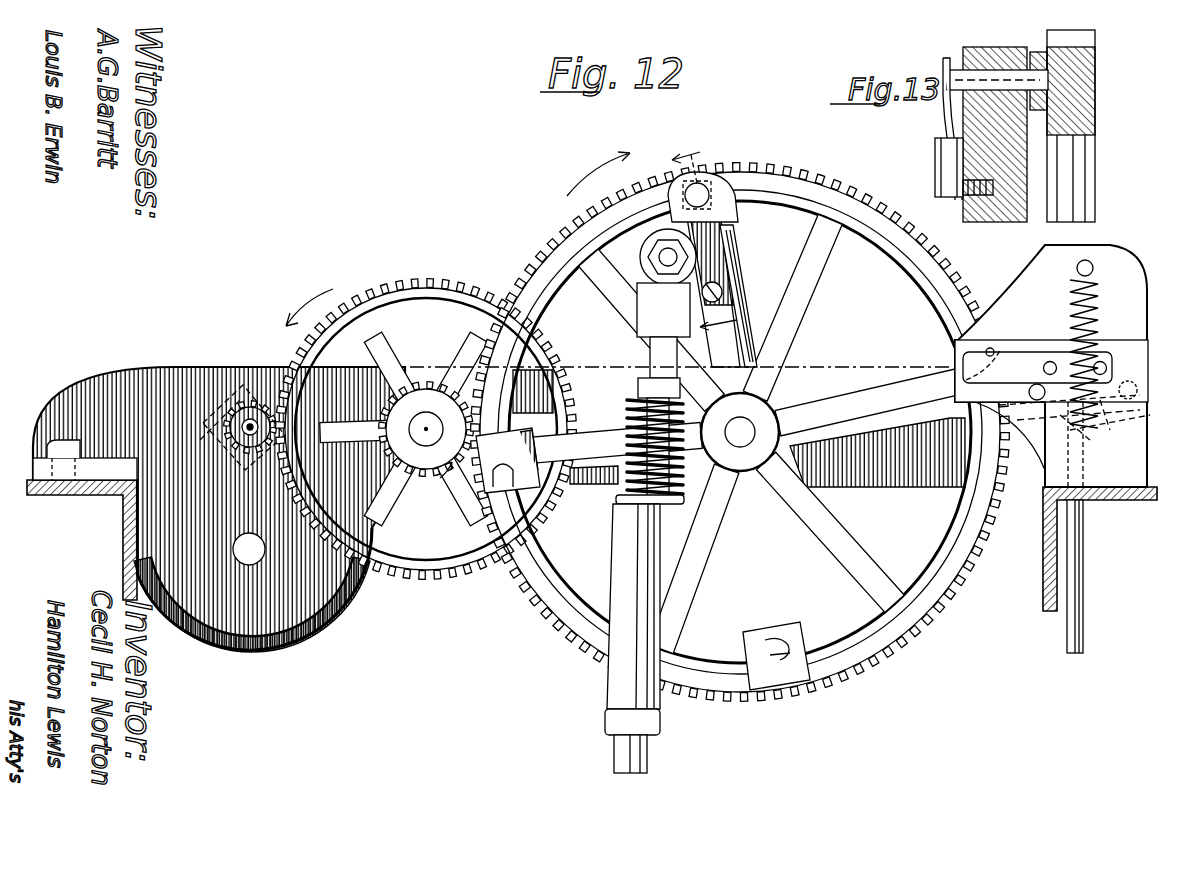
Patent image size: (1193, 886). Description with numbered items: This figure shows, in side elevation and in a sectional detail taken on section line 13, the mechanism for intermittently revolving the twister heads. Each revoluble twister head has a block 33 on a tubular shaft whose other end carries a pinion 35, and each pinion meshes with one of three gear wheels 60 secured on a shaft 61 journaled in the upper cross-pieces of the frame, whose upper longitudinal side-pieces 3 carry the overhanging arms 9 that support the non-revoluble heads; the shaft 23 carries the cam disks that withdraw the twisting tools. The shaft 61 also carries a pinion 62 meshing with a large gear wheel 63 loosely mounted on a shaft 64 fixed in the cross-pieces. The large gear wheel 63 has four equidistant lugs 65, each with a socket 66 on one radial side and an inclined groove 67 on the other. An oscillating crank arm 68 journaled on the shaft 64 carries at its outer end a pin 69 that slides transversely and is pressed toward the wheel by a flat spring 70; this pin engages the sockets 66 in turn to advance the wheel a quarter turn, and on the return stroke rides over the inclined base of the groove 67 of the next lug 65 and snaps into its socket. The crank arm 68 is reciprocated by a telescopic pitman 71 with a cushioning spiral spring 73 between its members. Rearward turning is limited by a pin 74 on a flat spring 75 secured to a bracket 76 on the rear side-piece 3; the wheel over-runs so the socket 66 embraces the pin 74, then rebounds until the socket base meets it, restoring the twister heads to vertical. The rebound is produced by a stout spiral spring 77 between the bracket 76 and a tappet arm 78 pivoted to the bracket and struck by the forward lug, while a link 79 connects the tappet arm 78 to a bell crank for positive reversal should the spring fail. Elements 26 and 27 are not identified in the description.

In FIG. 12, the upper longitudinal side-piece 3 is at (135, 530).
In FIG. 12, the overhanging arm 9 is at (908, 478).
In FIG. 12, the section line 13— 13 is at (705, 230).
In FIG. 12, the shaft 23 is at (243, 562).
In FIG. 12, the drum casing 26 is at (322, 600).
In FIG. 12, the drum ring 27 is at (292, 640).
In FIG. 12, the block 33 is at (266, 367).
In FIG. 12, the pinion 35 is at (236, 385).
In FIG. 12, the gear wheel 60 is at (403, 287).
In FIG. 12, the shaft 61 is at (466, 312).
In FIG. 12, the pinion 62 is at (430, 482).
In FIG. 12, the large gear wheel 63 is at (836, 193).
In FIG. 13, the large gear wheel 63 is at (1095, 48).
In FIG. 12, the shaft 64 is at (785, 392).
In FIG. 12, the lug 65 is at (790, 698).
In FIG. 12, the socket 66 is at (947, 372).
In FIG. 13, the socket 66 is at (1048, 86).
In FIG. 12, the inclined groove 67 is at (748, 698).
In FIG. 12, the oscillating crank arm 68 is at (740, 337).
In FIG. 13, the oscillating crank arm 68 is at (984, 58).
In FIG. 12, the pin 69 is at (705, 168).
In FIG. 13, the pin 69 is at (1005, 76).
In FIG. 12, the flat spring 70 is at (734, 258).
In FIG. 13, the flat spring 70 is at (945, 58).
In FIG. 12, the telescopic pitman 71 is at (612, 683).
In FIG. 12, the spiral spring 73 is at (630, 470).
In FIG. 12, the pin 74 is at (993, 352).
In FIG. 12, the flat spring 75 is at (1106, 362).
In FIG. 12, the bracket 76 is at (1138, 300).
In FIG. 12, the spiral spring 77 is at (1092, 273).
In FIG. 12, the tappet arm 78 is at (1118, 417).
In FIG. 12, the link 79 is at (1084, 600).